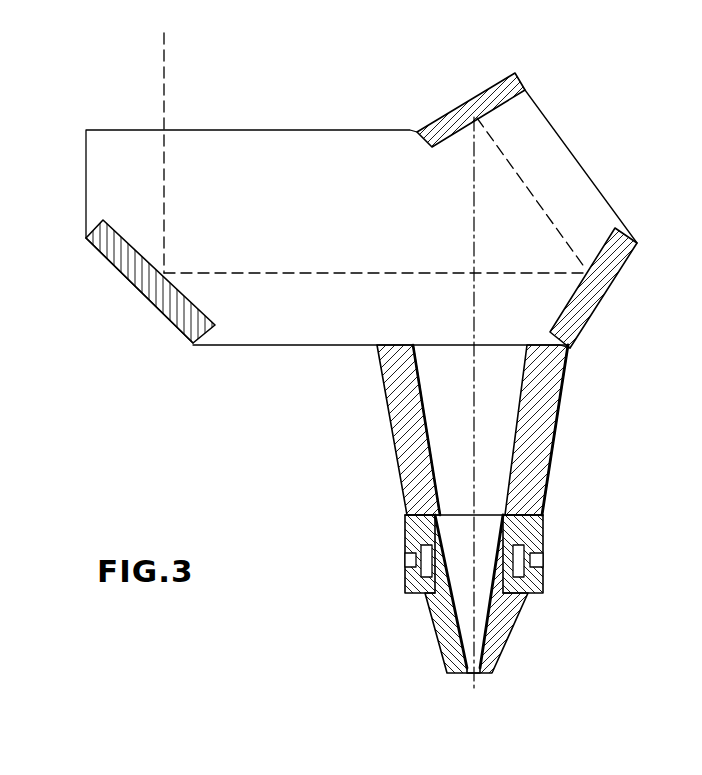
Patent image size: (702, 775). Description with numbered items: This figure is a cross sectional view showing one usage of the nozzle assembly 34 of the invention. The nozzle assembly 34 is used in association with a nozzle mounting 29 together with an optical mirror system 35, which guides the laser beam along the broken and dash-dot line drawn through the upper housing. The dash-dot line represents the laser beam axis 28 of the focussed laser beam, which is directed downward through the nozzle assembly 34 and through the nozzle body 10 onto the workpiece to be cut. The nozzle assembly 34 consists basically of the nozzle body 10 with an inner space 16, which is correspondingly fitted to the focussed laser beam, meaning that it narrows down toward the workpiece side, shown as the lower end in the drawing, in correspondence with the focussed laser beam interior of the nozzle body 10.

The optical mirror system 35 is at (361, 152).
The laser beam axis 28 is at (477, 393).
The nozzle mounting 29 is at (392, 448).
The inner space 16 is at (487, 534).
The nozzle body 10 is at (520, 610).
The nozzle assembly 34 is at (412, 620).